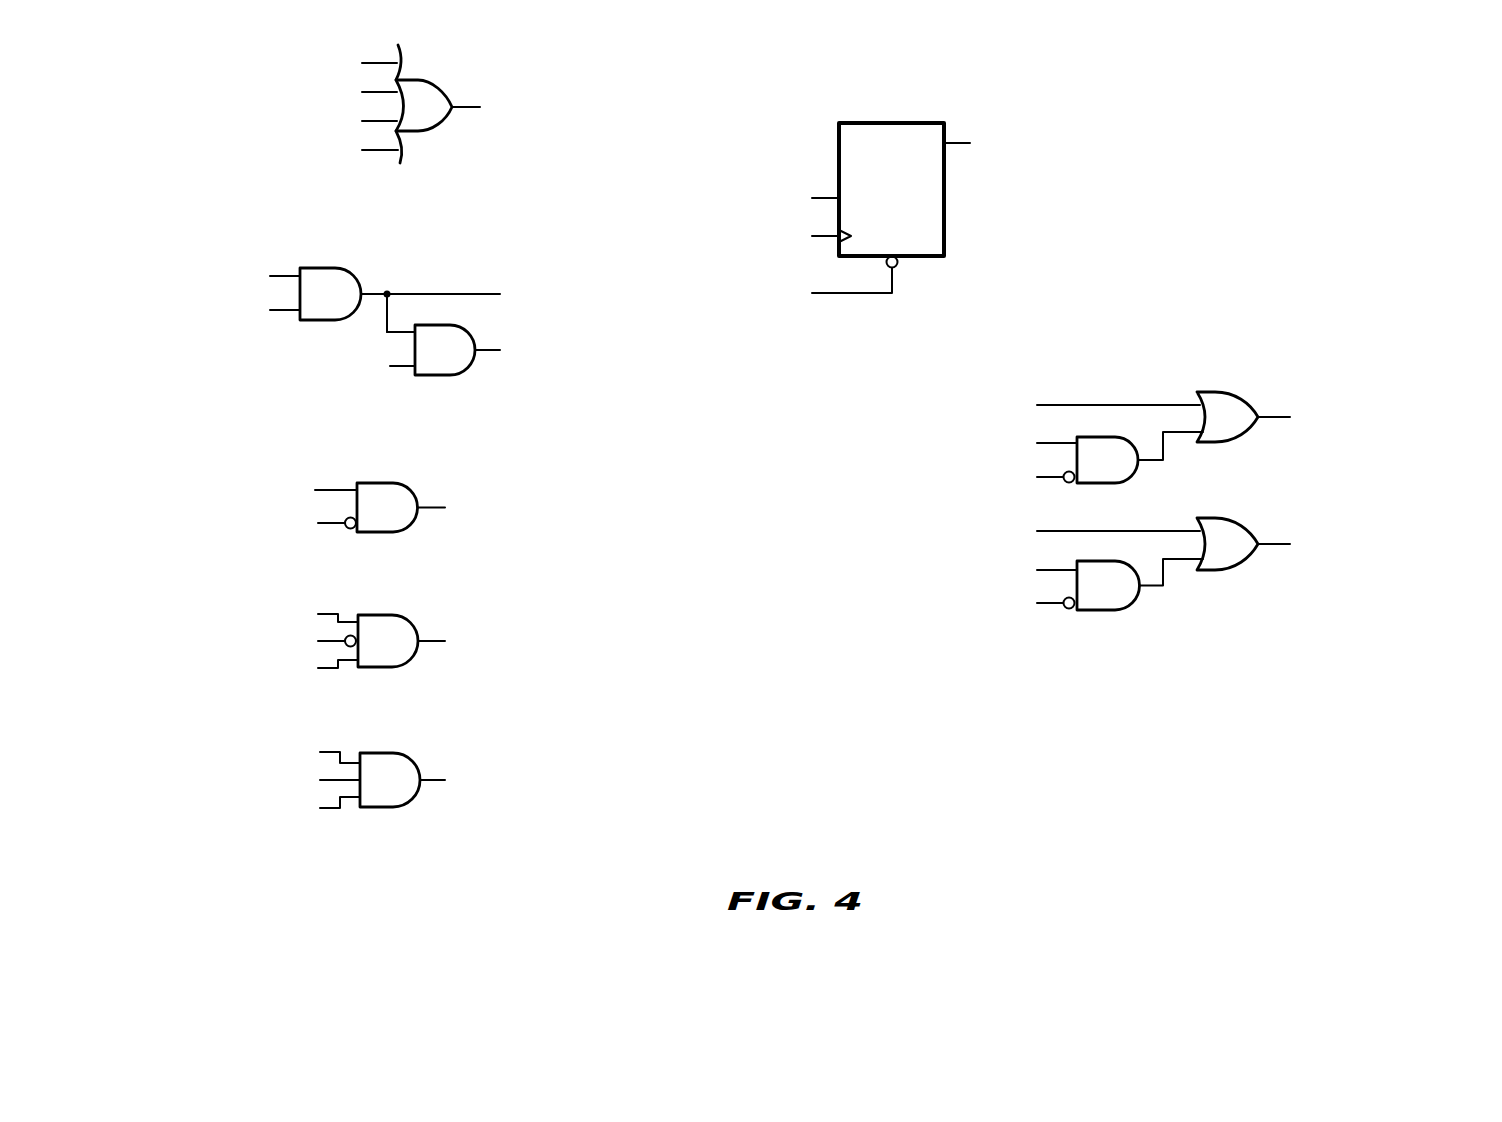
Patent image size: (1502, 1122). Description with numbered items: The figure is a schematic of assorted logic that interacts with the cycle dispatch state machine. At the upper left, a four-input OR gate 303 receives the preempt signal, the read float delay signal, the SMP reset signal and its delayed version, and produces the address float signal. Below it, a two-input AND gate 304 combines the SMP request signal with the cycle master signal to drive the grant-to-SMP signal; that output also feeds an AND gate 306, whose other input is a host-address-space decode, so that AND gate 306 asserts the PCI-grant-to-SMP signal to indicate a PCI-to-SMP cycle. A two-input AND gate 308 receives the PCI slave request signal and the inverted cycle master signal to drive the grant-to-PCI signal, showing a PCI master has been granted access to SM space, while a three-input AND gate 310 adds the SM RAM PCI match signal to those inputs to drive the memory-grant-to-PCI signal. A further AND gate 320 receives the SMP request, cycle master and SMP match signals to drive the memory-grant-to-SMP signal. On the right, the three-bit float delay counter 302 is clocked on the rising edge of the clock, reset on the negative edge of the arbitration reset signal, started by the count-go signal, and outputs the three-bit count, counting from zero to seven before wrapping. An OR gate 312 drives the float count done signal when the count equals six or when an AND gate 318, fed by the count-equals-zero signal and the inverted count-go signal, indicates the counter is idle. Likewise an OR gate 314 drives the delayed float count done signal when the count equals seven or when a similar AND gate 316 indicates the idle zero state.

The float delay counter 302 is at (925, 123).
The four-input OR gate 303 is at (420, 80).
The two-input AND gate 304 is at (338, 268).
The AND gate 306 is at (455, 375).
The two-input AND gate 308 is at (393, 483).
The three-input AND gate 310 is at (393, 615).
The OR gate 312 is at (1225, 392).
The OR gate 314 is at (1225, 518).
The AND gate 316 is at (1115, 610).
The AND gate 318 is at (1115, 483).
The AND gate 320 is at (395, 753).